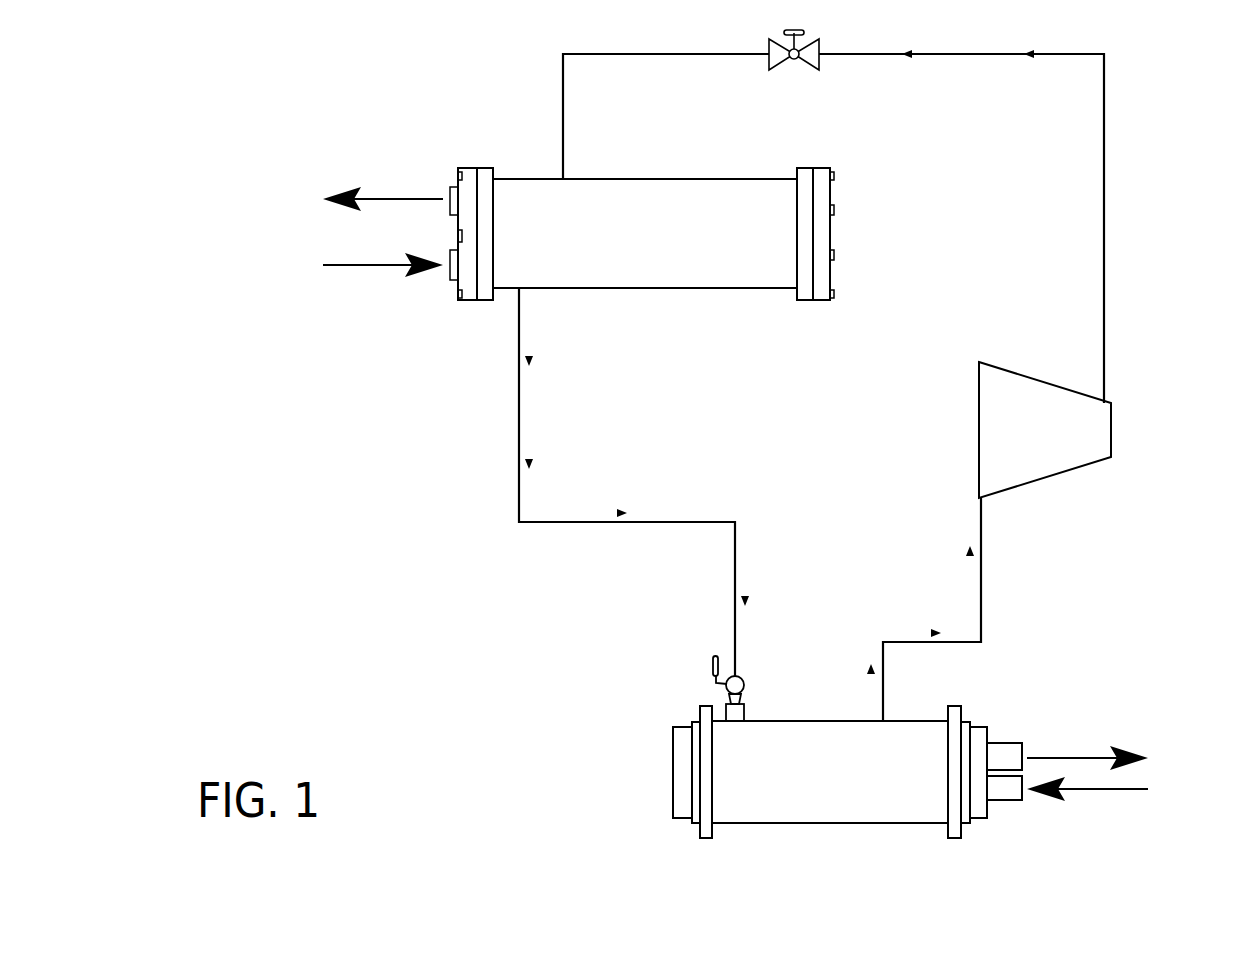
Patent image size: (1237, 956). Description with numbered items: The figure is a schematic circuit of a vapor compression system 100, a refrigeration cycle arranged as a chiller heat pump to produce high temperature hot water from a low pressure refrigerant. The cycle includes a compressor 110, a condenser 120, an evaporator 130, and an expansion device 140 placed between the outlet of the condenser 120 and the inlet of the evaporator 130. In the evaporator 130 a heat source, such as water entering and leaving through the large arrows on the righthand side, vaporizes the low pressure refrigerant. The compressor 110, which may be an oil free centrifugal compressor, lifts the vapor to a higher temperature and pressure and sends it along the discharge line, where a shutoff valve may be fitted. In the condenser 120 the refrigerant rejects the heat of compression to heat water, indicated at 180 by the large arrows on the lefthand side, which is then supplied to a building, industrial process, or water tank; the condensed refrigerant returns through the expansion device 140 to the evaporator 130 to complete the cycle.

The vapor compression system 100 is at (1148, 225).
The compressor 110 is at (1111, 435).
The condenser 120 is at (738, 175).
The evaporator 130 is at (673, 773).
The expansion device 140 is at (742, 677).
The heated water 180 is at (347, 193).